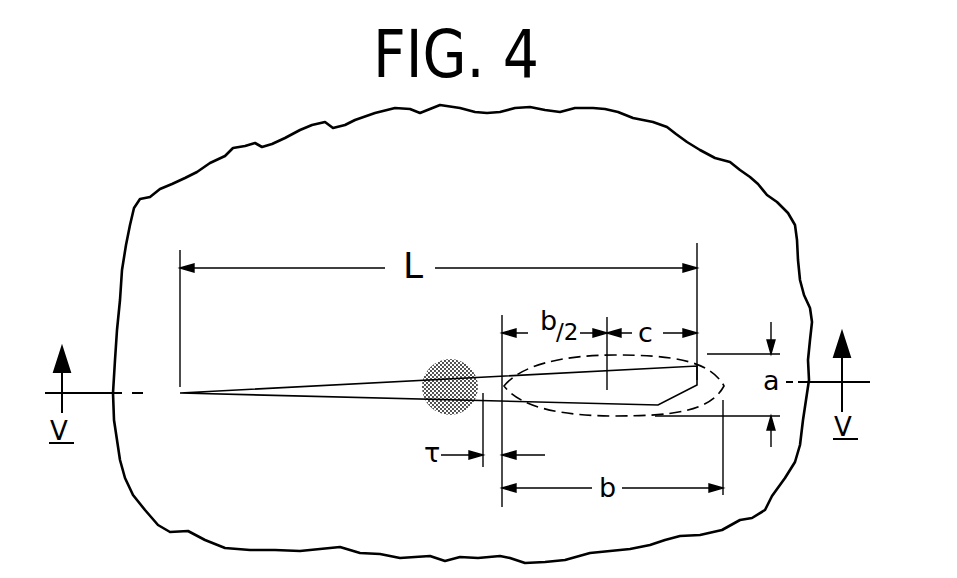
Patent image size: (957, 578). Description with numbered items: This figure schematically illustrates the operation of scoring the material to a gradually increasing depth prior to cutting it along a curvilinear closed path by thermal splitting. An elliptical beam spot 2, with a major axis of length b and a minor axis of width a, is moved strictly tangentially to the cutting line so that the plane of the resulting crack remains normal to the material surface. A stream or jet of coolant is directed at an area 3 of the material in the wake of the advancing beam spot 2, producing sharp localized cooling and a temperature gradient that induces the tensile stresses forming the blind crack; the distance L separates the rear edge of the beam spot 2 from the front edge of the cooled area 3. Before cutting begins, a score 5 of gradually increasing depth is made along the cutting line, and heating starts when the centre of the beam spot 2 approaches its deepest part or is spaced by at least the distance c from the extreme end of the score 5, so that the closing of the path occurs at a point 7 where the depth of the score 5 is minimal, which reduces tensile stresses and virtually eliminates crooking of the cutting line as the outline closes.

The beam spot 2 is at (707, 355).
The area 3 is at (433, 367).
The score 5 is at (297, 387).
The point 7 is at (680, 138).